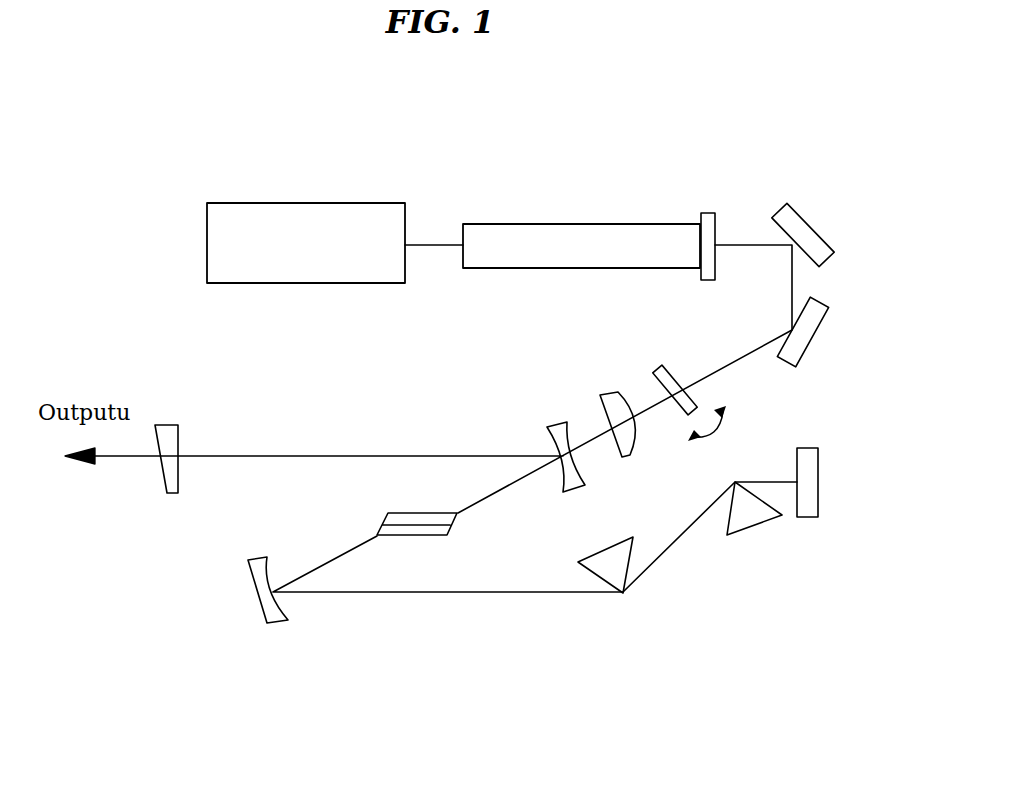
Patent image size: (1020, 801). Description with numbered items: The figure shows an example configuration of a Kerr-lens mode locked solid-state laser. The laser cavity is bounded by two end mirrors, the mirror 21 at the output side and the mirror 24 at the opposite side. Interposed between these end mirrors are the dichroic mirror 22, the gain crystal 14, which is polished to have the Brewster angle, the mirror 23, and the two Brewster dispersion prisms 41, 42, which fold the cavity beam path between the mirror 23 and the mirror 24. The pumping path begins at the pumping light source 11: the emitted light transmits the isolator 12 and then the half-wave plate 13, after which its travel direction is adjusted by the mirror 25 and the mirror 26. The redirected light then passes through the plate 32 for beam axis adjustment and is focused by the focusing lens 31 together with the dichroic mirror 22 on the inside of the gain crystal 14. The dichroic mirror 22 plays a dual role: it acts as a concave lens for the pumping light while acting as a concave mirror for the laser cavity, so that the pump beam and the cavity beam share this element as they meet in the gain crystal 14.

The pumping light source 11 is at (250, 207).
The isolator 12 is at (521, 228).
The λ/2 wave plate 13 is at (708, 222).
The gain crystal 14 is at (394, 522).
The mirror 21 is at (170, 440).
The dichroic mirror 22 is at (553, 430).
The mirror 23 is at (273, 620).
The mirror 24 is at (808, 462).
The mirror 25 is at (797, 222).
The mirror 26 is at (797, 334).
The focusing lens 31 is at (605, 400).
The plate for beam axis adjustment 32 is at (660, 376).
The Brewster dispersion prism 41 is at (605, 566).
The Brewster dispersion prism 42 is at (742, 515).